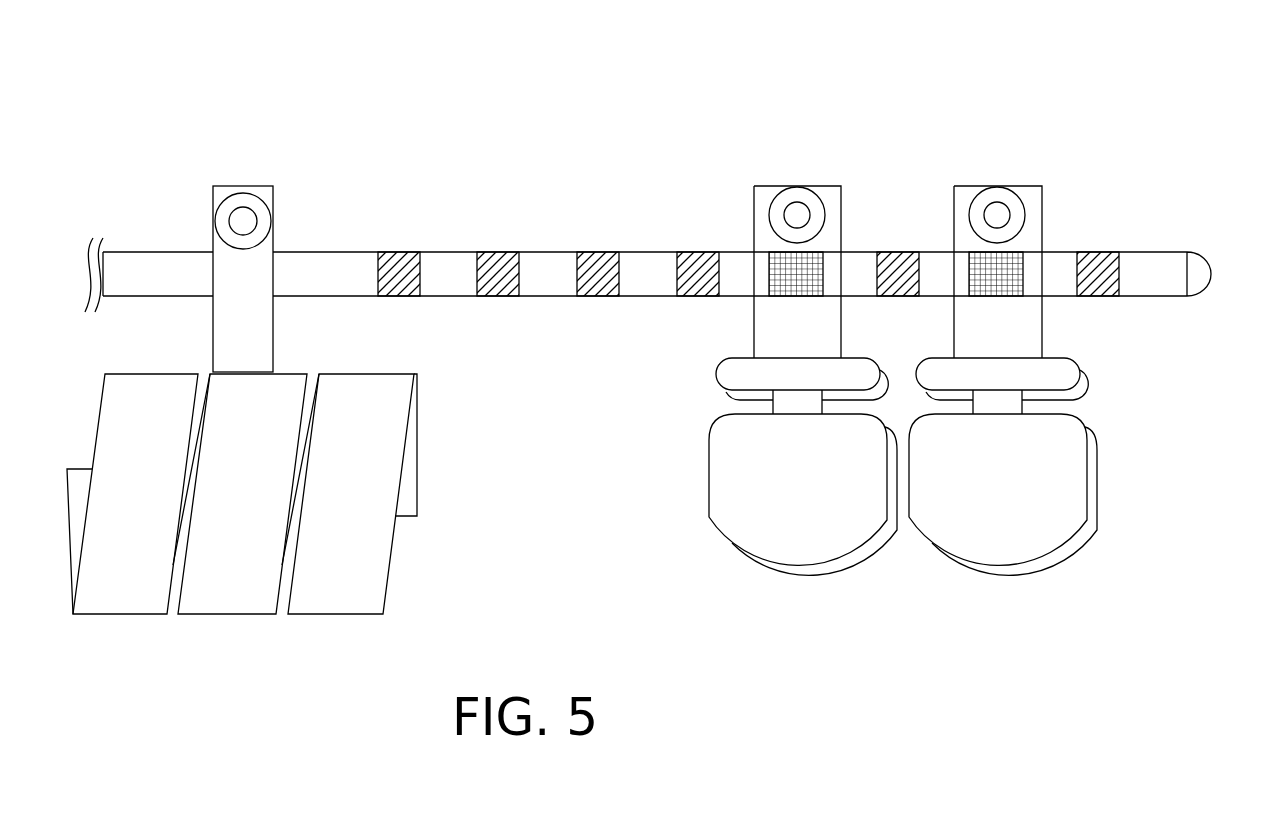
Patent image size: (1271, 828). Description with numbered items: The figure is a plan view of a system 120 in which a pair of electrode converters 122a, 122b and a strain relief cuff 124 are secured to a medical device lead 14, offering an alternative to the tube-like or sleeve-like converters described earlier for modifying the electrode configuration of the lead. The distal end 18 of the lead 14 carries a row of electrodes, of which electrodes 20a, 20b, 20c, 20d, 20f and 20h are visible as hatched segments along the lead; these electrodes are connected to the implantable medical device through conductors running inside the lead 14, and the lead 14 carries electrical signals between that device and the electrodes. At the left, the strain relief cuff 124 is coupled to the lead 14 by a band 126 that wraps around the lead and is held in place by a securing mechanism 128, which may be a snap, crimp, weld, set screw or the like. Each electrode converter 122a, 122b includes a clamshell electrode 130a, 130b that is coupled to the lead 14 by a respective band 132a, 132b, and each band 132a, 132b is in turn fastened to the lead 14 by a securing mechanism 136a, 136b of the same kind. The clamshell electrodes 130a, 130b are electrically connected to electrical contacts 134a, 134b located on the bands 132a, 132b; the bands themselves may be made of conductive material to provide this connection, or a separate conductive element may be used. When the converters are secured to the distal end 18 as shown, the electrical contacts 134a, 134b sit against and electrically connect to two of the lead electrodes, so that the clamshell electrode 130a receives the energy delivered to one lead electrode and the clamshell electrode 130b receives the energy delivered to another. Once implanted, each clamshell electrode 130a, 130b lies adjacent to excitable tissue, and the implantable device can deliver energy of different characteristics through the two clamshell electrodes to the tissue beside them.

The lead 14 is at (158, 250).
The distal end 18 is at (1190, 238).
The electrode 20a is at (387, 250).
The electrode 20b is at (487, 250).
The electrode 20c is at (587, 250).
The electrode 20d is at (687, 250).
The electrode 20f is at (887, 250).
The electrode 20h is at (1087, 250).
The system 120 is at (442, 118).
The electrode converter 122a is at (809, 163).
The electrode converter 122b is at (999, 163).
The strain relief cuff 124 is at (153, 590).
The band 126 is at (273, 362).
The securing mechanism 128 is at (237, 200).
The clamshell electrode 130a is at (771, 486).
The clamshell electrode 130b is at (971, 486).
The band 132a is at (753, 313).
The band 132b is at (1043, 305).
The electrical contact 134a is at (823, 272).
The electrical contact 134b is at (1008, 264).
The securing mechanism 136a is at (788, 198).
The securing mechanism 136b is at (988, 198).